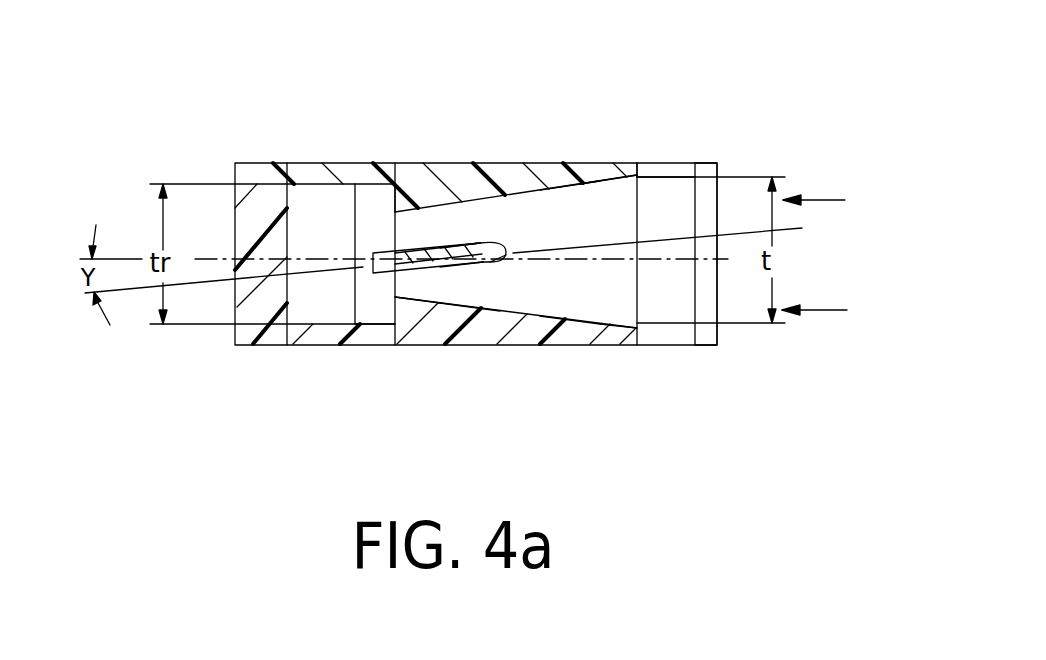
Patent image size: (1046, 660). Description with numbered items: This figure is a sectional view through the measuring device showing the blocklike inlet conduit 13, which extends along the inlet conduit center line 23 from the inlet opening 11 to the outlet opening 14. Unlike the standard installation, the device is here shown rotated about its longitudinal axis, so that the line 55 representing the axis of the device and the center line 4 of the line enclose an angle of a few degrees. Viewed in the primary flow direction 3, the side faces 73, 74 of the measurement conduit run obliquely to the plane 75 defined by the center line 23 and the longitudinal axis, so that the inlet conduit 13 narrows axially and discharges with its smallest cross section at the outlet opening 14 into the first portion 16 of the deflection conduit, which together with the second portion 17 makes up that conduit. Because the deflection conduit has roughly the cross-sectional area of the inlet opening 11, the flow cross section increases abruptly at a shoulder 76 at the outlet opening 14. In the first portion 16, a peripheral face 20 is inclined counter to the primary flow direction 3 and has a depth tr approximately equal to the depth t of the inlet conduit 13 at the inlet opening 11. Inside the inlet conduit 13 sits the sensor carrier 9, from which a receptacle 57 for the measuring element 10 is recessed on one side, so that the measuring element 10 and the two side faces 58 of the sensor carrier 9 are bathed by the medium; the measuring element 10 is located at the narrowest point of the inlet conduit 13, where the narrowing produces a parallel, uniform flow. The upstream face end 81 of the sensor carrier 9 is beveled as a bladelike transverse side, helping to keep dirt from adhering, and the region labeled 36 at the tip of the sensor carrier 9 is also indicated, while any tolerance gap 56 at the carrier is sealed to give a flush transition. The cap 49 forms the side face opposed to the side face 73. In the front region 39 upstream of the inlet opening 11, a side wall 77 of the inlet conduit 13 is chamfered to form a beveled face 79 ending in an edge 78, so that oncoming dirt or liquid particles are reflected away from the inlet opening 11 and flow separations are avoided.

The primary flow direction 3 is at (814, 255).
The center line 4 is at (404, 185).
The sensor carrier 9 is at (419, 242).
The measuring element 10 is at (433, 223).
The inlet opening 11 is at (637, 207).
The inlet conduit 13 is at (525, 205).
The outlet opening 14 is at (407, 212).
The first portion of the deflection conduit 16 is at (370, 358).
The second portion of the deflection conduit 17 is at (382, 318).
The peripheral face 20 is at (316, 203).
The inlet conduit center line 23 is at (404, 185).
The tip end of insert 36 is at (507, 262).
The front region 39 is at (690, 305).
The cap 49 is at (563, 187).
The line representing the axis of the device 55 is at (126, 295).
The gap 56 is at (487, 265).
The receptacle 57 is at (447, 250).
The side faces of the sensor carrier 58 is at (489, 240).
The side face 73 is at (586, 311).
The side face 74 is at (592, 180).
The plane 75 is at (118, 255).
The shoulder 76 is at (421, 305).
The side wall 77 is at (470, 335).
The edge 78 is at (625, 304).
The beveled face 79 is at (636, 175).
The upstream face end 81 is at (507, 248).